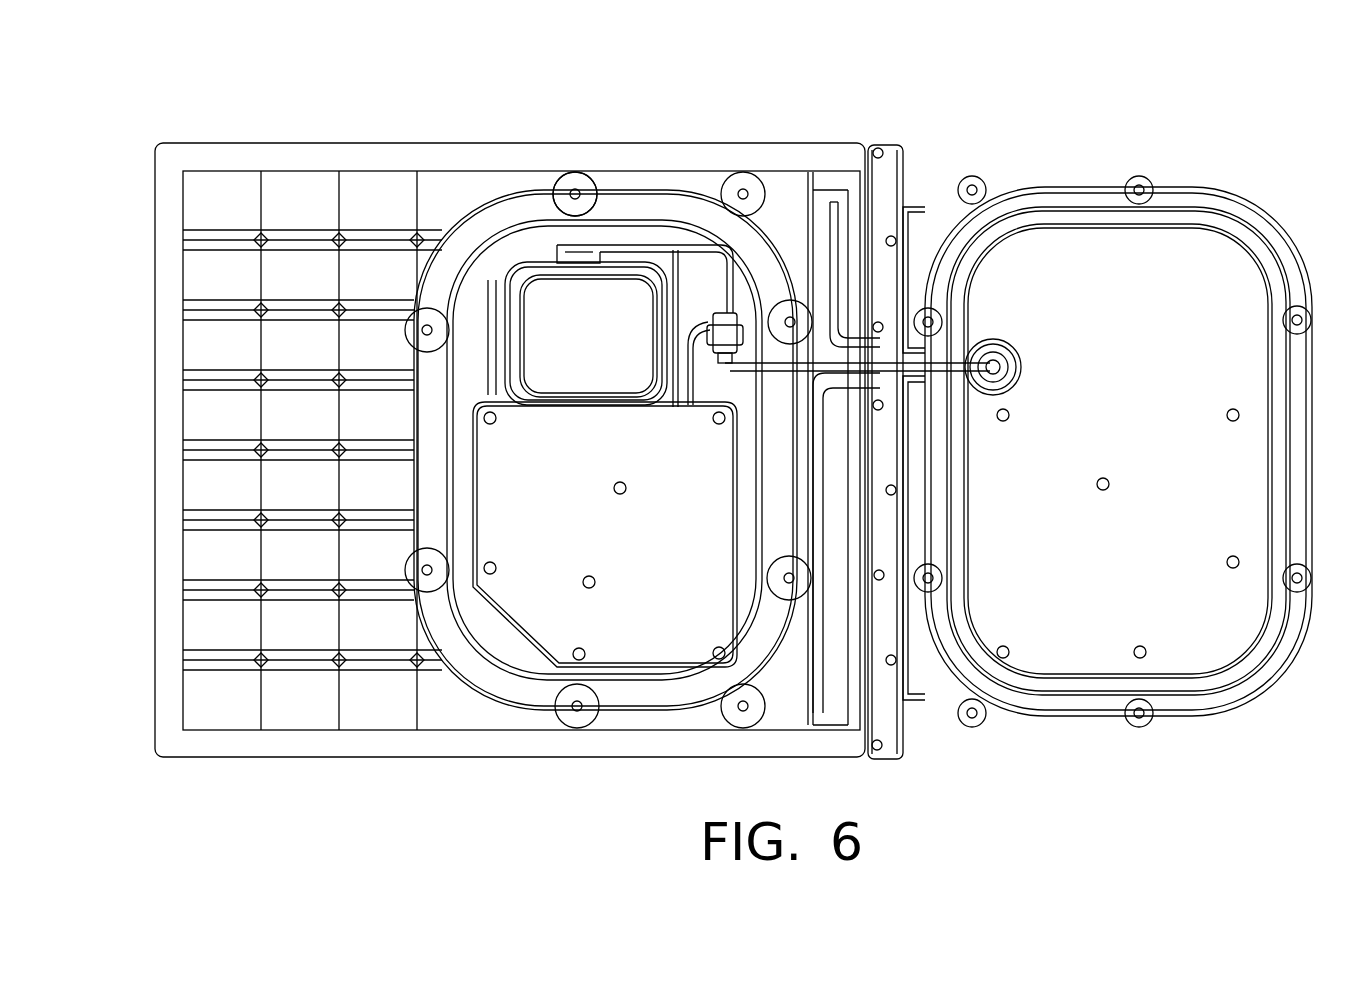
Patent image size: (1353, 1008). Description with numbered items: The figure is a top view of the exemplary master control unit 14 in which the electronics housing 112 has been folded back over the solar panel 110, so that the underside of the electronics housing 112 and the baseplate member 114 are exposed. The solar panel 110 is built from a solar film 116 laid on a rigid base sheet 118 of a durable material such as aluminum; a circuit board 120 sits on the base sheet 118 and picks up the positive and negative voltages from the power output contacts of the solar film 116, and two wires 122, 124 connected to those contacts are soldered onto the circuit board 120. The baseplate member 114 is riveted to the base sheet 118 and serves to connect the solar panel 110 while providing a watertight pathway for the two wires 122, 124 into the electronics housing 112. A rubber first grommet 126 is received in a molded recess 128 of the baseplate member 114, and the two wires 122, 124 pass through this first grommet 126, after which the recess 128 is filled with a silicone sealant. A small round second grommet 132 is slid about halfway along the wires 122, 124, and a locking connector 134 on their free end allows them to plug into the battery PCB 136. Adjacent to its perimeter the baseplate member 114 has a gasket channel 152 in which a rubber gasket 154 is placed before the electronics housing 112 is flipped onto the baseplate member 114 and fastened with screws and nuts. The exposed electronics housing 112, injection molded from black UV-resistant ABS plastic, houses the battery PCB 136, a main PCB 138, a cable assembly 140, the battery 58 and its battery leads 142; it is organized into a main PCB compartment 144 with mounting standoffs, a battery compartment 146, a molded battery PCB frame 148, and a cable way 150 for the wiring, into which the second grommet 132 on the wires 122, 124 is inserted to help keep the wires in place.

The master control unit 14 is at (223, 797).
The battery 58 is at (545, 350).
The solar panel 110 is at (257, 143).
The electronics housing 112 is at (513, 710).
The baseplate member 114 is at (1190, 628).
The solar film 116 is at (217, 572).
The base sheet 118 is at (155, 685).
The circuit board 120 is at (835, 692).
The wire 122 is at (850, 360).
The wire 124 is at (885, 360).
The first grommet 126 is at (988, 360).
The molded recess 128 is at (1007, 350).
The second grommet 132 is at (735, 313).
The locking connector 134 is at (668, 247).
The battery PCB 136 is at (560, 237).
The main PCB 138 is at (530, 607).
The cable assembly 140 is at (613, 243).
The battery leads 142 is at (485, 338).
The main PCB compartment 144 is at (475, 522).
The battery compartment 146 is at (502, 312).
The molded battery PCB frame 148 is at (567, 203).
The cable way 150 is at (702, 268).
The gasket channel 152 is at (1212, 223).
The gasket 154 is at (1250, 270).